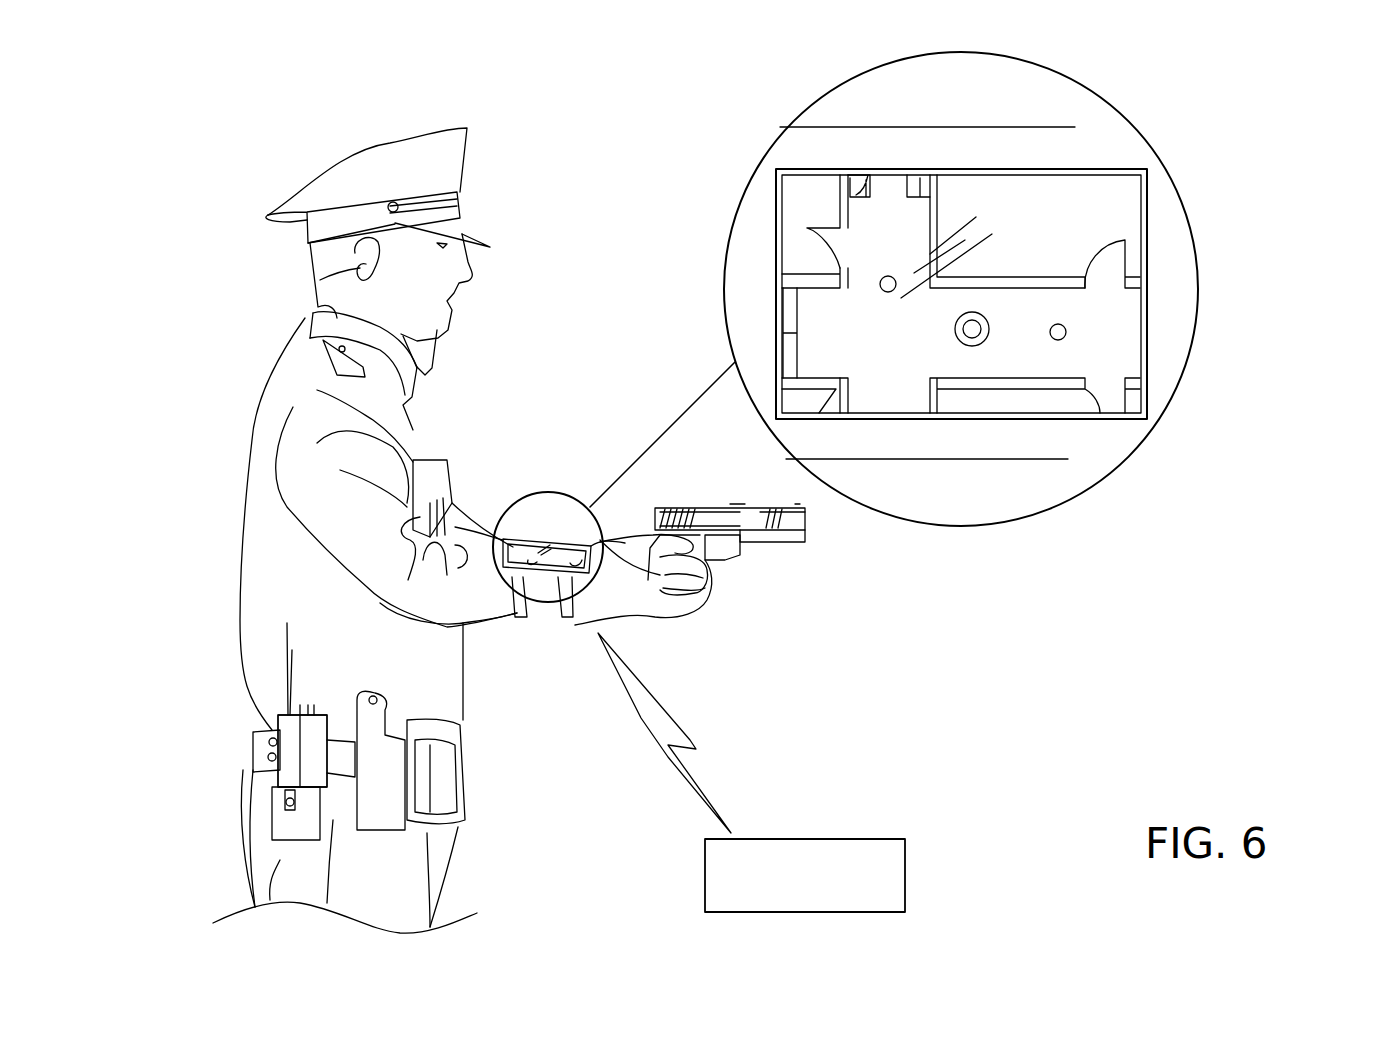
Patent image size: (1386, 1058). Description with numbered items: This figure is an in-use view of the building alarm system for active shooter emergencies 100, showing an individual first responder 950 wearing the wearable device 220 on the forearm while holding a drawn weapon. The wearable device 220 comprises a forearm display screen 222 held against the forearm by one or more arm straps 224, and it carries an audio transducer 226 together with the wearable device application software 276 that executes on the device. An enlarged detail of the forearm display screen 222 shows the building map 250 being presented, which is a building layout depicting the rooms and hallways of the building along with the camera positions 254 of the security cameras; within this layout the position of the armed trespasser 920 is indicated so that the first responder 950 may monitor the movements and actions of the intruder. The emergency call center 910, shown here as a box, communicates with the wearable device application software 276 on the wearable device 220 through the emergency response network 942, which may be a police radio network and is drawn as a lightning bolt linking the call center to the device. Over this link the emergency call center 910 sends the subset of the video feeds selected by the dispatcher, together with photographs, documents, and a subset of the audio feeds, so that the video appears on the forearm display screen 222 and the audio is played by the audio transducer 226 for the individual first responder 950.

The building alarm system for active shooter emergencies 100 is at (230, 195).
The individual first responder 950 is at (267, 578).
The wearable device 220 is at (503, 638).
The forearm display screen 222 is at (515, 560).
The arm straps 224 is at (572, 613).
The audio transducer 226 is at (575, 562).
The wearable device application software 276 is at (537, 560).
The emergency response network 942 is at (692, 730).
The emergency call center 910 is at (906, 870).
The building map 250 is at (1100, 207).
The camera positions 254 is at (879, 280).
The armed trespasser 920 is at (972, 346).